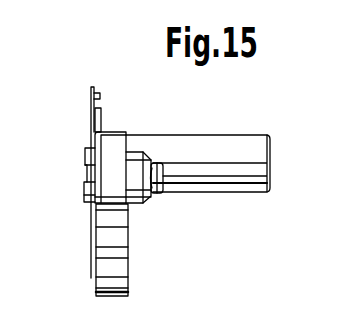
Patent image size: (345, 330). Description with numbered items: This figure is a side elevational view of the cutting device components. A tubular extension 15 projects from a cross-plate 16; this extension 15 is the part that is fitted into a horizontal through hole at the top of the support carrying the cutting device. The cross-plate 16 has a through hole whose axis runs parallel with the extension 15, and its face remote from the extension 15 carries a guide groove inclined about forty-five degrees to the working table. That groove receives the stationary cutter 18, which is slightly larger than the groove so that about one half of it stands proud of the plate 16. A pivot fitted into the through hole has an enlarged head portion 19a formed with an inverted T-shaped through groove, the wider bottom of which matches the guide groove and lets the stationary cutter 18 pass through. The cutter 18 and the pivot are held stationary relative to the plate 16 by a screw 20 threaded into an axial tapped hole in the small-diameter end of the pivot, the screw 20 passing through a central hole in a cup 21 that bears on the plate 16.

The tubular extension 15 is at (182, 147).
The cross-plate 16 is at (118, 264).
The stationary cutter 18 is at (100, 97).
The head portion 19a is at (84, 187).
The screw 20 is at (162, 189).
The cup 21 is at (135, 211).